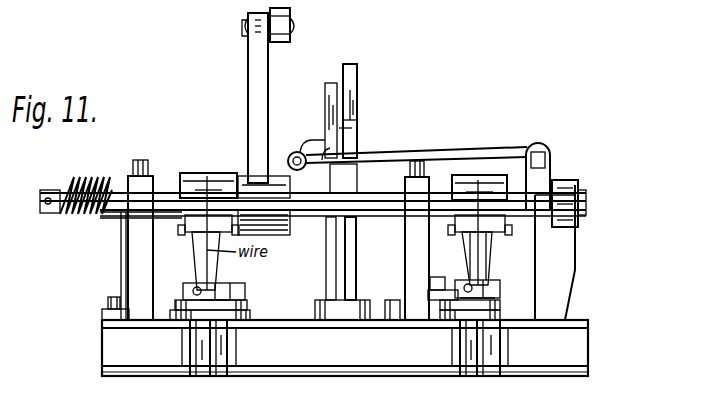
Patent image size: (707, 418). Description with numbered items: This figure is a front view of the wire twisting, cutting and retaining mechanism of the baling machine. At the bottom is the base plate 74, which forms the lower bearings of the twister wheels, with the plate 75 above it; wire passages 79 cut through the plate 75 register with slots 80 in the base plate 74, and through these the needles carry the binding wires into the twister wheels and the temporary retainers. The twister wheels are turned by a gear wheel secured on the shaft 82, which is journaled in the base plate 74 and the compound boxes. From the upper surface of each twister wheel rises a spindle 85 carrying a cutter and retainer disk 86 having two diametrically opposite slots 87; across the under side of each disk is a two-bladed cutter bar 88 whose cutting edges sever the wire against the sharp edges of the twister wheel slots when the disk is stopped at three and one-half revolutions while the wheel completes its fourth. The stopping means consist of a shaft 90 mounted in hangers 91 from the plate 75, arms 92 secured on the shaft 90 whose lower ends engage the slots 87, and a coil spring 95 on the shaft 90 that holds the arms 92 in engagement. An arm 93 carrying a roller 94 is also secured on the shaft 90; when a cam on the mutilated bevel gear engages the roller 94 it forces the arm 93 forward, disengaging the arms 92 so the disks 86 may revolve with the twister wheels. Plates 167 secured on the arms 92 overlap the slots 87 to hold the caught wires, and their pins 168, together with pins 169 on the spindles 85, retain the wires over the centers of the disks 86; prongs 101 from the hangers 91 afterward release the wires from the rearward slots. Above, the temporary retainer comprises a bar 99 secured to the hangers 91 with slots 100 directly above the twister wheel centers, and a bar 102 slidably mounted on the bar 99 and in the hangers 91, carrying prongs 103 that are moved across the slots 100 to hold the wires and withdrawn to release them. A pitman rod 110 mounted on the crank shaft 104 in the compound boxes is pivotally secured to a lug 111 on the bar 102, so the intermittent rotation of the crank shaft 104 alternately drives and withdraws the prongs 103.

The base plate 74 is at (590, 369).
The plate 75 is at (590, 323).
The wire passages 79 is at (228, 330).
The slots 80 is at (193, 378).
The shaft 82 is at (358, 140).
The spindles 85 is at (240, 284).
The cutter and retainer disks 86 is at (247, 295).
The slots 87 is at (183, 330).
The cutter bar 88 is at (248, 314).
The shaft 90 is at (586, 205).
The hangers 91 is at (148, 195).
The arms 92 is at (210, 172).
The arm 93 is at (262, 100).
The roller 94 is at (290, 18).
The coil spring 95 is at (85, 215).
The bar 99 is at (547, 220).
The slots 100 is at (537, 190).
The prongs 101 is at (182, 278).
The bar 102 is at (585, 207).
The prongs 103 is at (186, 142).
The crank shaft 104 is at (345, 118).
The pitman rod 110 is at (423, 152).
The lug 111 is at (548, 150).
The plates 167 is at (236, 282).
The pins 168 is at (470, 278).
The pins 169 is at (490, 278).